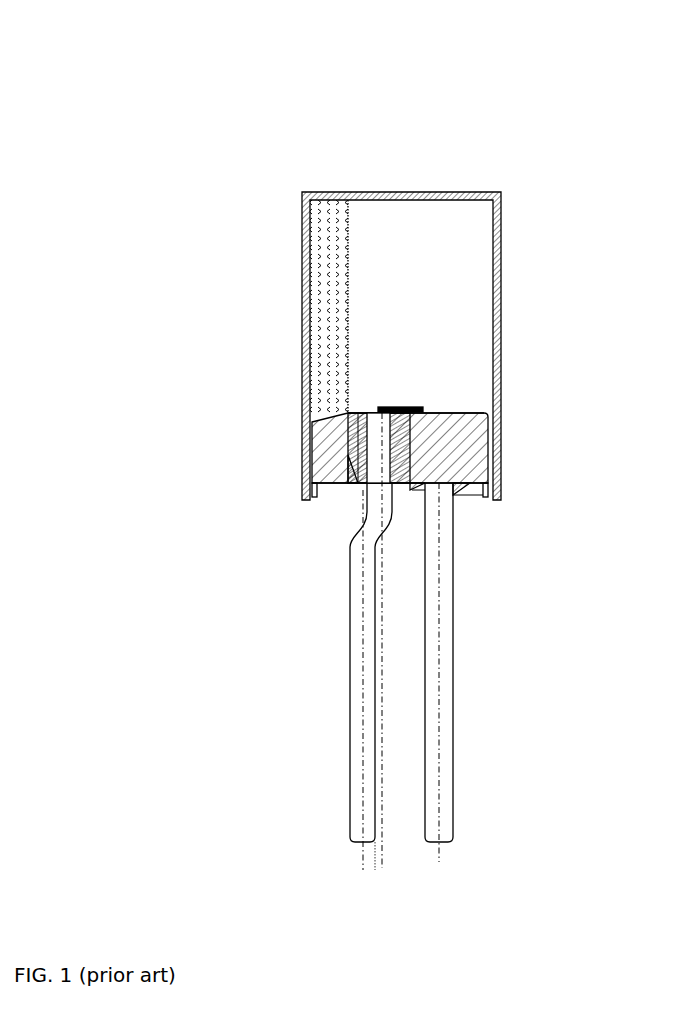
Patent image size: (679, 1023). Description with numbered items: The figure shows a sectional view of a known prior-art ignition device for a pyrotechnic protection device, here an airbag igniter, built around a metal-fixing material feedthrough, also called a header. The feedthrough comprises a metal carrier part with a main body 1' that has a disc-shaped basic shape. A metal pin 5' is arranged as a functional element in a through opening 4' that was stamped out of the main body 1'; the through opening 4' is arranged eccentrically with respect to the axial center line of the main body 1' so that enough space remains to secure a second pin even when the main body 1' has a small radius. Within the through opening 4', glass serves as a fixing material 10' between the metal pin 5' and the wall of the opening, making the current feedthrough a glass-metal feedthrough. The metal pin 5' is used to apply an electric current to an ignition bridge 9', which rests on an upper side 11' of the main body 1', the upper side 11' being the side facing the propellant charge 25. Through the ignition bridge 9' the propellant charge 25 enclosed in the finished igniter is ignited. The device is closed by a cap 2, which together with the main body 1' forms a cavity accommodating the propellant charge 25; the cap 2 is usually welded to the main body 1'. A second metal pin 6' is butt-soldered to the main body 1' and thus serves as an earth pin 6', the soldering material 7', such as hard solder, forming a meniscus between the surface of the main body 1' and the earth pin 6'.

The cap 2 is at (410, 193).
The propellant charge 25 is at (340, 252).
The main body 1' is at (461, 462).
The upper side 11' is at (486, 358).
The fixing material 10' is at (269, 438).
The through opening 4' is at (267, 501).
The ignition bridge 9' is at (488, 294).
The metal pin 5' is at (319, 641).
The second metal pin 6' is at (487, 672).
The soldering material 7' is at (484, 554).